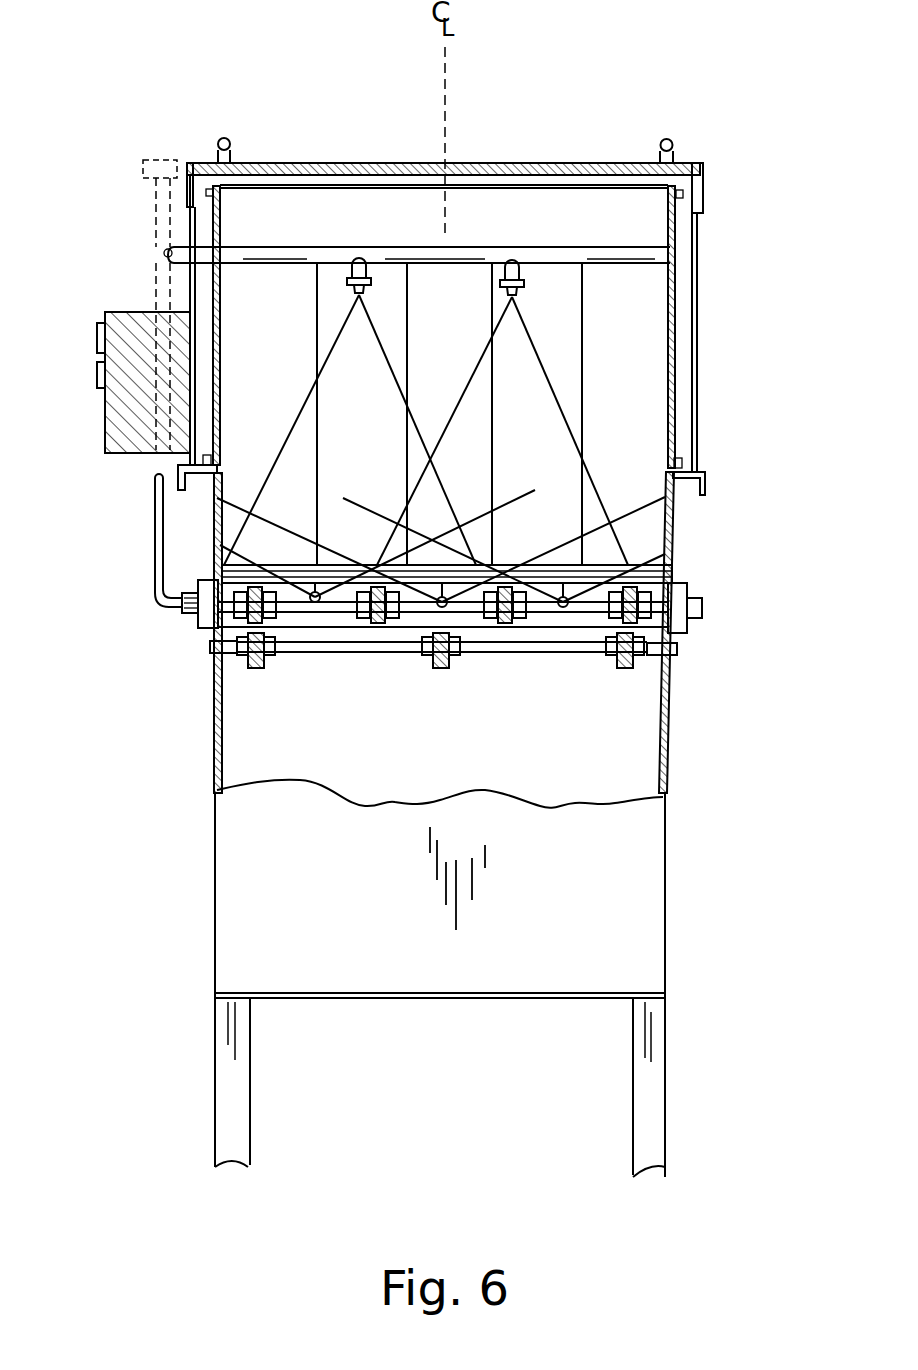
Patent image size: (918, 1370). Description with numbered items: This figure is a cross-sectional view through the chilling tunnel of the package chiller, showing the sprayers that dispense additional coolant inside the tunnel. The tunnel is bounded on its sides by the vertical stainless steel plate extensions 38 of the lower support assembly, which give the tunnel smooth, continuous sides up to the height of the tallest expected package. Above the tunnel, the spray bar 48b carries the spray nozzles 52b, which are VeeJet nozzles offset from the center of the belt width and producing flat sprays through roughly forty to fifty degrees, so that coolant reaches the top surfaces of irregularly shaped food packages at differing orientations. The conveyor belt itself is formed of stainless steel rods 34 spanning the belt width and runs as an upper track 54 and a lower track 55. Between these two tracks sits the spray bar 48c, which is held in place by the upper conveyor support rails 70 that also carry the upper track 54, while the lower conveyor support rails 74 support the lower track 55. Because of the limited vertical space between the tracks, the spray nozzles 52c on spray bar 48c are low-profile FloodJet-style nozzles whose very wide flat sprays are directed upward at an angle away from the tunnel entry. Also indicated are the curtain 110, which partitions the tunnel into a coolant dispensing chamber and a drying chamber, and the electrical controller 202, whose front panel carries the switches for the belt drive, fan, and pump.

The stainless steel rods 34 is at (560, 568).
The vertical stainless steel plate extensions 38 is at (205, 540).
The spray bar 48b is at (264, 246).
The spray bar 48c is at (156, 613).
The spray nozzles 52b is at (373, 281).
The spray nozzles 52c is at (438, 598).
The upper track 54 is at (357, 553).
The lower track 55 is at (512, 647).
The upper conveyor support rails 70 is at (272, 553).
The lower conveyor support rails 74 is at (252, 664).
The curtain 110 is at (290, 328).
The electrical controller 202 is at (150, 310).